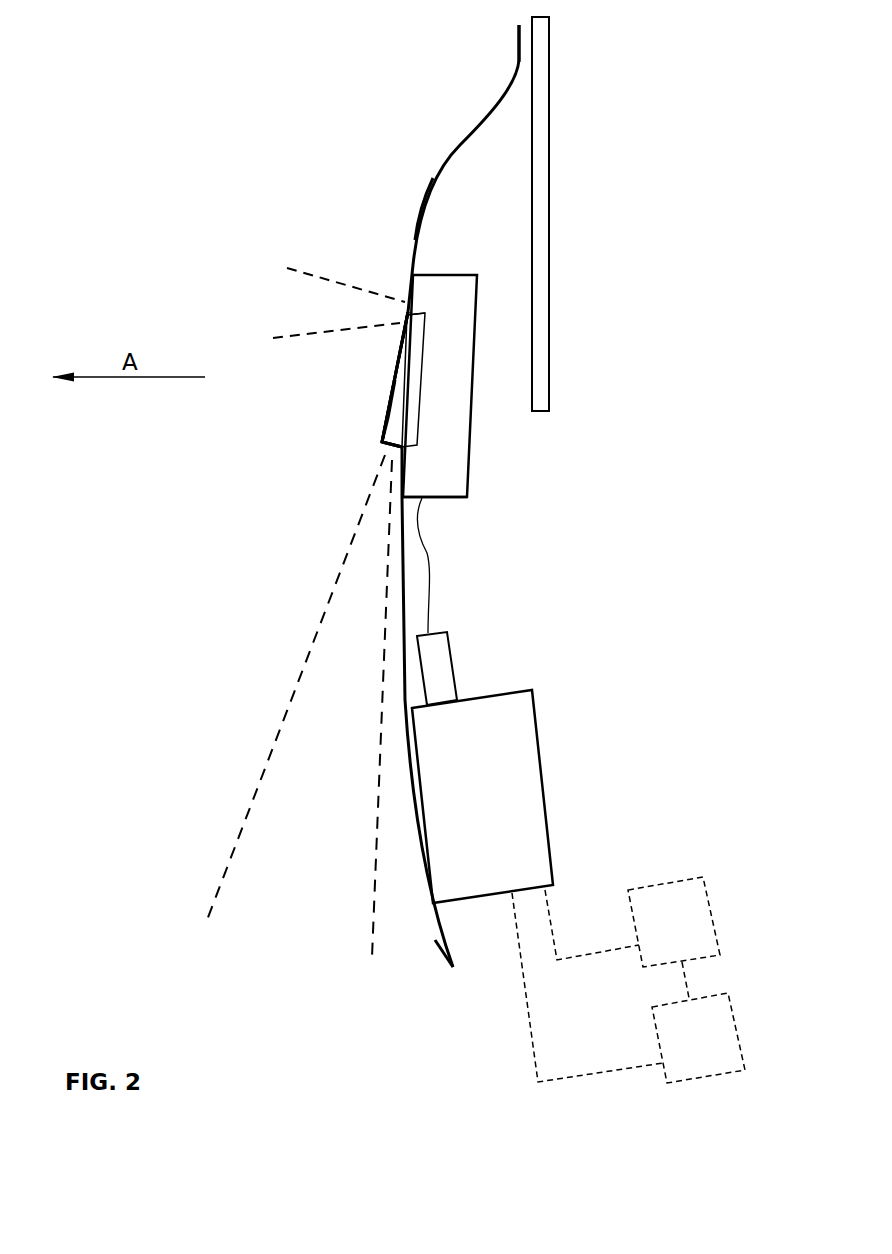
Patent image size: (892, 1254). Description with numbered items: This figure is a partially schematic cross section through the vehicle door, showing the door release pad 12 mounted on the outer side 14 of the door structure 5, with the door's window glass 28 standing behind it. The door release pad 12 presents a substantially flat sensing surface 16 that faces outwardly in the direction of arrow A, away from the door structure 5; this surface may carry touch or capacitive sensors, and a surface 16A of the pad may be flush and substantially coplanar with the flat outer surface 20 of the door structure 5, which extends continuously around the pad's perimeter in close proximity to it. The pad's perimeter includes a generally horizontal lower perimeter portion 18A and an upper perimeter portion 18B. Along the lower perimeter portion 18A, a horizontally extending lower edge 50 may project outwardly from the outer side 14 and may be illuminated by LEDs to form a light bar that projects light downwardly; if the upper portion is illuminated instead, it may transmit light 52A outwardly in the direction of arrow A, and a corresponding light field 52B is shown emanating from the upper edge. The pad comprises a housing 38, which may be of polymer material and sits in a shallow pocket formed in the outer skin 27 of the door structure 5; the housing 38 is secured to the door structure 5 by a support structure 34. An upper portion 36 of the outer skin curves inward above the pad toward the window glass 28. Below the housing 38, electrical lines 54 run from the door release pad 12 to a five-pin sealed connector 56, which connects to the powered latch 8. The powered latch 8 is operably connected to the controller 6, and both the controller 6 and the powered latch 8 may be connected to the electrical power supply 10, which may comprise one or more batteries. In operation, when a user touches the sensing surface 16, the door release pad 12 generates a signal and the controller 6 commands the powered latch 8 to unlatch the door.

The door structure 5 is at (517, 62).
The outer side 14 is at (433, 178).
The upper portion of trim panel 36 is at (415, 237).
The window 28 is at (550, 217).
The housing 38 is at (417, 420).
The flat sensing surface 16 is at (392, 402).
The surface 16A is at (407, 383).
The outer surface 20 is at (407, 308).
The upper end of display 18B is at (405, 315).
The upper viewing range 52B is at (315, 278).
The door release pad 12 is at (388, 359).
The lower perimeter portion 18A is at (387, 437).
The lower edge 50 is at (385, 448).
The light 52A is at (300, 675).
The support structure 34 is at (450, 498).
The electrical lines 54 is at (427, 560).
The 5-pin sealed connector 56 is at (457, 676).
The powered latch 8 is at (548, 810).
The controller 6 is at (717, 913).
The electrical power supply 10 is at (738, 1033).
The outer skin 27 is at (435, 942).